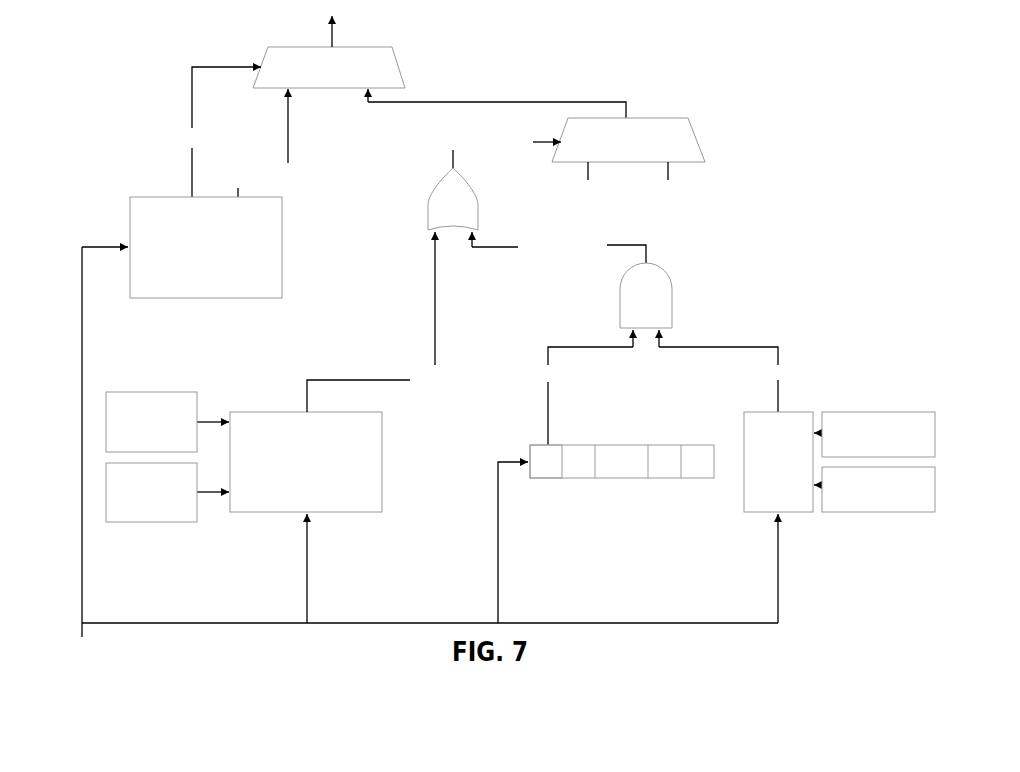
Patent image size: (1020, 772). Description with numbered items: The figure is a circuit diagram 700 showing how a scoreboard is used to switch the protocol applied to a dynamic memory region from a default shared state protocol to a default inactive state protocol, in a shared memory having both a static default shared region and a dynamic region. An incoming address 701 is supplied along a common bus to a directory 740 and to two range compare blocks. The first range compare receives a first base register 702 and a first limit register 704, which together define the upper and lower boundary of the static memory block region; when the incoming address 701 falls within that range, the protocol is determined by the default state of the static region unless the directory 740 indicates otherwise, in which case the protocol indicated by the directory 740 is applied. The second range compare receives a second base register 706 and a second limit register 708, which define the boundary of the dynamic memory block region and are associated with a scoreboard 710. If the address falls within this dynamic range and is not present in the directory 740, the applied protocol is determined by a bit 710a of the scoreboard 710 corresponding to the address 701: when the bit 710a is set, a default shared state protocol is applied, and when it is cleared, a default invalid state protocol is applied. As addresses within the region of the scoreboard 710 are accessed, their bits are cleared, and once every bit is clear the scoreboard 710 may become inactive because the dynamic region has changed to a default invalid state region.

The circuit diagram 700 is at (476, 331).
The incoming address 701 is at (45, 647).
The first base register 702 is at (122, 392).
The first limit register 704 is at (128, 522).
The second base register 706 is at (850, 412).
The second limit register 708 is at (858, 512).
The scoreboard 710 is at (634, 482).
The bit 710a is at (547, 478).
The directory 740 is at (130, 207).